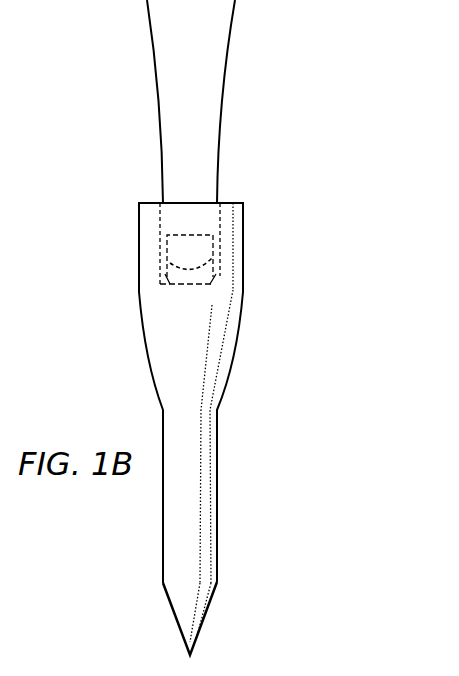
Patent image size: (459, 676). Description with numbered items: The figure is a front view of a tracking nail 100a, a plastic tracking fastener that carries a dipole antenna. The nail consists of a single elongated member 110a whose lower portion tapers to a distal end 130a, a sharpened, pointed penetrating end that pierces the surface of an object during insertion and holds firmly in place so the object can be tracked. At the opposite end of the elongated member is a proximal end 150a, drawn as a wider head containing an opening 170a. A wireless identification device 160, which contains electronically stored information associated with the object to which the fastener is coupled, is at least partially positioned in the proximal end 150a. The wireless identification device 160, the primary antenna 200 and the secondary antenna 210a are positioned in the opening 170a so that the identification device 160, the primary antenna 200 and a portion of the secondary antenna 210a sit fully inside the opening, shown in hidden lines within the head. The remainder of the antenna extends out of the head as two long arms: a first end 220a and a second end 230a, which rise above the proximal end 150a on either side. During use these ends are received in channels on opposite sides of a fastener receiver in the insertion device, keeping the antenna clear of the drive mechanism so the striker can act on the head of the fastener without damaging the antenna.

The tracking nail 100a is at (120, 168).
The elongated member 110a is at (218, 495).
The distal end 130a is at (208, 616).
The proximal end 150a is at (233, 205).
The wireless identification device 160 is at (191, 254).
The opening 170a is at (180, 220).
The primary antenna 200 is at (168, 271).
The secondary antenna 210a is at (212, 282).
The first end 220a is at (156, 56).
The second end 230a is at (221, 90).